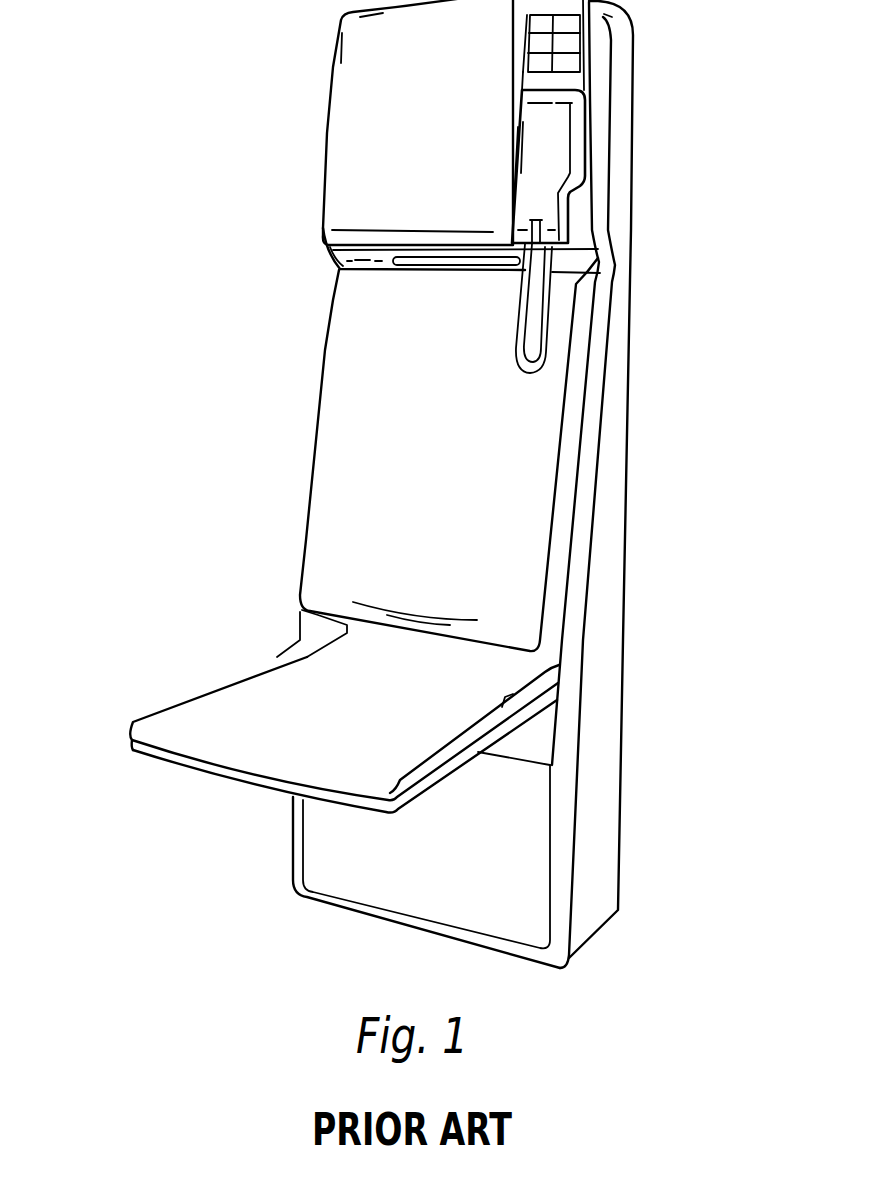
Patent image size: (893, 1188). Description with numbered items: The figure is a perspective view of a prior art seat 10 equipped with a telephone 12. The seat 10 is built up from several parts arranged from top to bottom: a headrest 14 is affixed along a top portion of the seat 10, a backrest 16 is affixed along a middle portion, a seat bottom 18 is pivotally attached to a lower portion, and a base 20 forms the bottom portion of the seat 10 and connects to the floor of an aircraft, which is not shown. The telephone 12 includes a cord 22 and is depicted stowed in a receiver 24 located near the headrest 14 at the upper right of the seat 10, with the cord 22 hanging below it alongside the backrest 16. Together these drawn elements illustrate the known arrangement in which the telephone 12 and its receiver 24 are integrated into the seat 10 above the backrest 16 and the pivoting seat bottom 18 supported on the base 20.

The seat 10 is at (114, 408).
The telephone 12 is at (570, 143).
The headrest 14 is at (383, 99).
The backrest 16 is at (390, 395).
The seat bottom 18 is at (233, 720).
The base 20 is at (597, 834).
The cord 22 is at (548, 328).
The receiver 24 is at (586, 93).